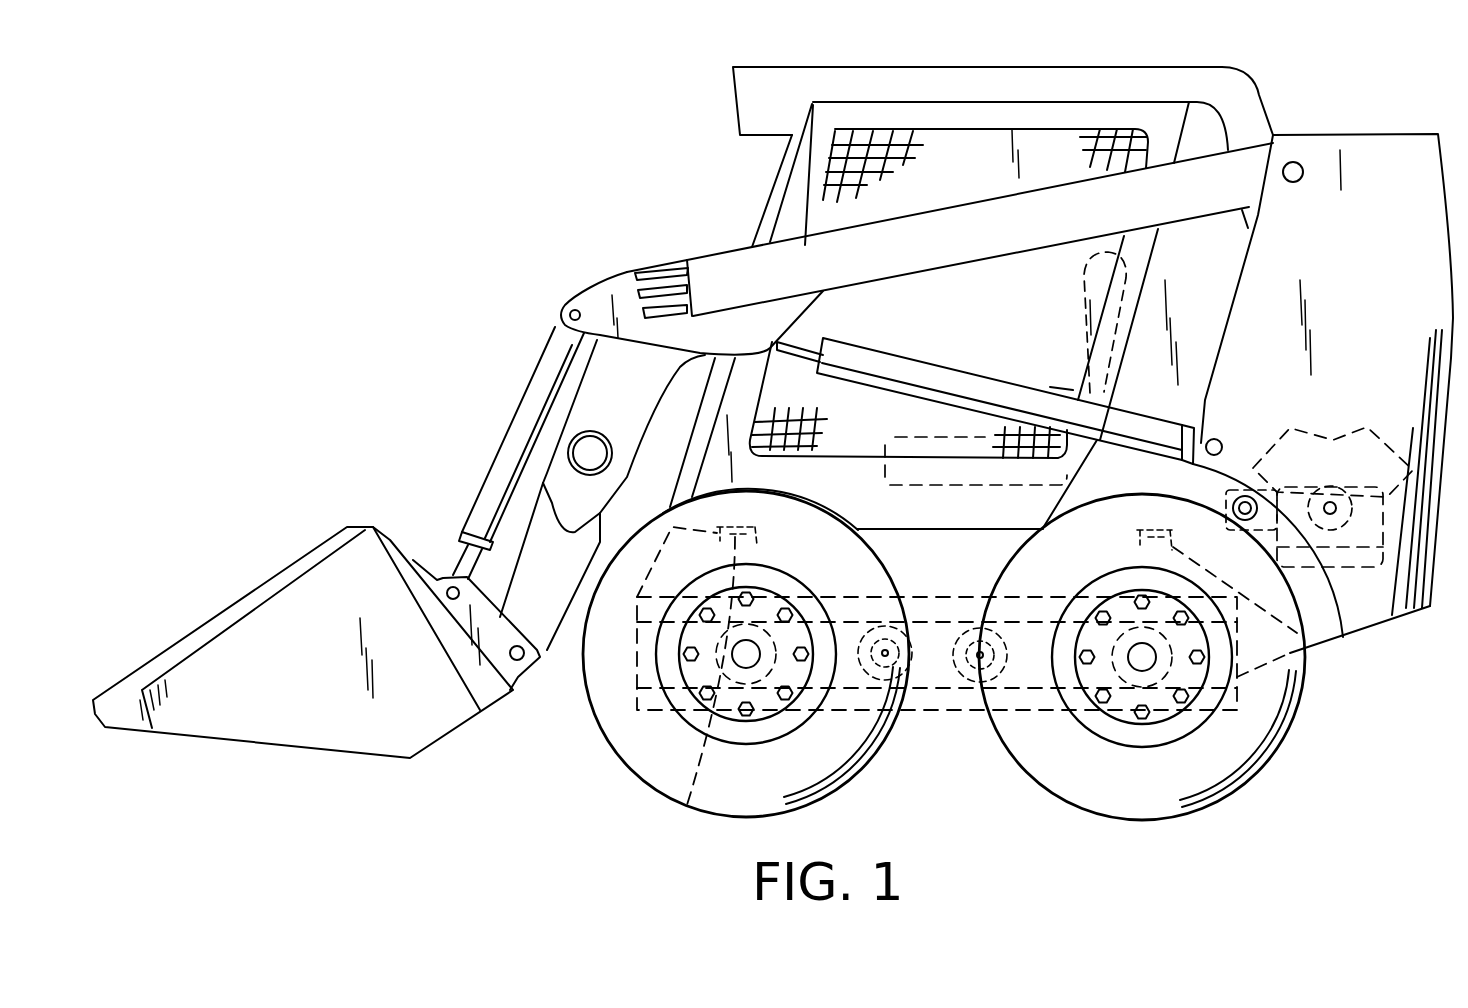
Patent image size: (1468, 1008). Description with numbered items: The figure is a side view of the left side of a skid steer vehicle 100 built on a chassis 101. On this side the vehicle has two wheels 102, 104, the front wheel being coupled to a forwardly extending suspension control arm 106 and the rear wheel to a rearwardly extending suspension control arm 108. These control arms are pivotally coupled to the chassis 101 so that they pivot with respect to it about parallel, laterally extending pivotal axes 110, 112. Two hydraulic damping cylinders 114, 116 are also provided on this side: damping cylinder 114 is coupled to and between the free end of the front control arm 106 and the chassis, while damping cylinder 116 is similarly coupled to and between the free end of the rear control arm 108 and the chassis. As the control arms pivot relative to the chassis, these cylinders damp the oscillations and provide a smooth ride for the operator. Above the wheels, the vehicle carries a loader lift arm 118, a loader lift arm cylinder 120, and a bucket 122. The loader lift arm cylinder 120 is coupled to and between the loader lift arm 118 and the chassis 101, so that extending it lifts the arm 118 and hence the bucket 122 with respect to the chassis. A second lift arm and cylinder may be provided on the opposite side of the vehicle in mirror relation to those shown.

The skid steer vehicle 100 is at (476, 150).
The chassis 101 is at (968, 722).
The wheel 102 is at (605, 733).
The wheel 104 is at (1272, 760).
The forwardly extending suspension control arm 106 is at (678, 820).
The rearwardly extending suspension control arm 108 is at (1135, 692).
The pivotal axis 110 is at (907, 647).
The pivotal axis 112 is at (1003, 647).
The hydraulic damping cylinder 114 is at (655, 522).
The hydraulic damping cylinder 116 is at (1307, 623).
The loader lift arm 118 is at (708, 250).
The loader lift arm cylinder 120 is at (950, 368).
The bucket 122 is at (253, 587).